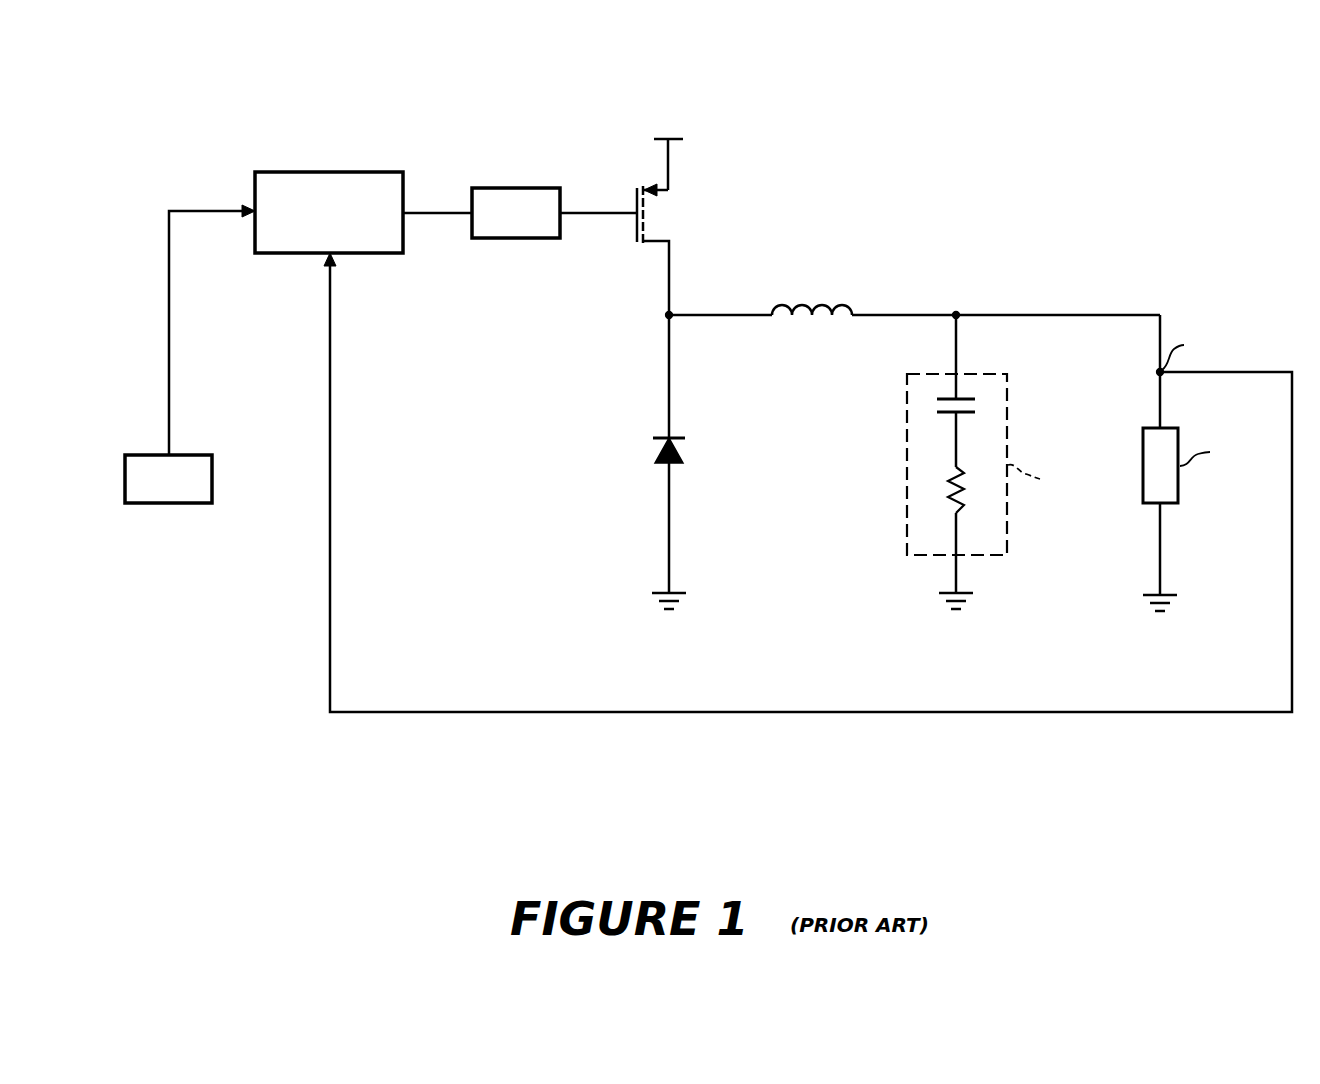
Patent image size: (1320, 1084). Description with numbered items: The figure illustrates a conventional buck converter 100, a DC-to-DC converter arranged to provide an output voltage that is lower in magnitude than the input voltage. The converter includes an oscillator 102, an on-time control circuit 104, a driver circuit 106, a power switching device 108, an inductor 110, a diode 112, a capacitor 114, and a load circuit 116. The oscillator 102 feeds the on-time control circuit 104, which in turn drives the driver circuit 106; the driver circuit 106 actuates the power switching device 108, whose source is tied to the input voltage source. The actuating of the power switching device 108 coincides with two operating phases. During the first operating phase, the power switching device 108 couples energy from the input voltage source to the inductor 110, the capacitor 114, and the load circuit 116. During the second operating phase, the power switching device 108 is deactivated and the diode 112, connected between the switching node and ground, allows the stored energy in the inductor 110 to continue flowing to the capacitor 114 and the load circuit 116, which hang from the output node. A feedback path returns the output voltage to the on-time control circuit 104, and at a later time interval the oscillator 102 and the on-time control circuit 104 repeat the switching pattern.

The prior art constant on-time buck regulator 100 is at (1100, 176).
The oscillator OSC (unnumbered in drawing) 102 is at (168, 479).
The on-time control block (unnumbered in drawing) 104 is at (329, 212).
The driver DRV (unnumbered in drawing) 106 is at (516, 213).
The power switch PSW (unnumbered in drawing) 108 is at (676, 205).
The inductor L (unnumbered in drawing) 110 is at (812, 294).
The diode D (unnumbered in drawing) 112 is at (682, 462).
The output capacitor C (unnumbered in drawing) 114 is at (984, 461).
The LOAD (unnumbered in drawing) 116 is at (1206, 463).